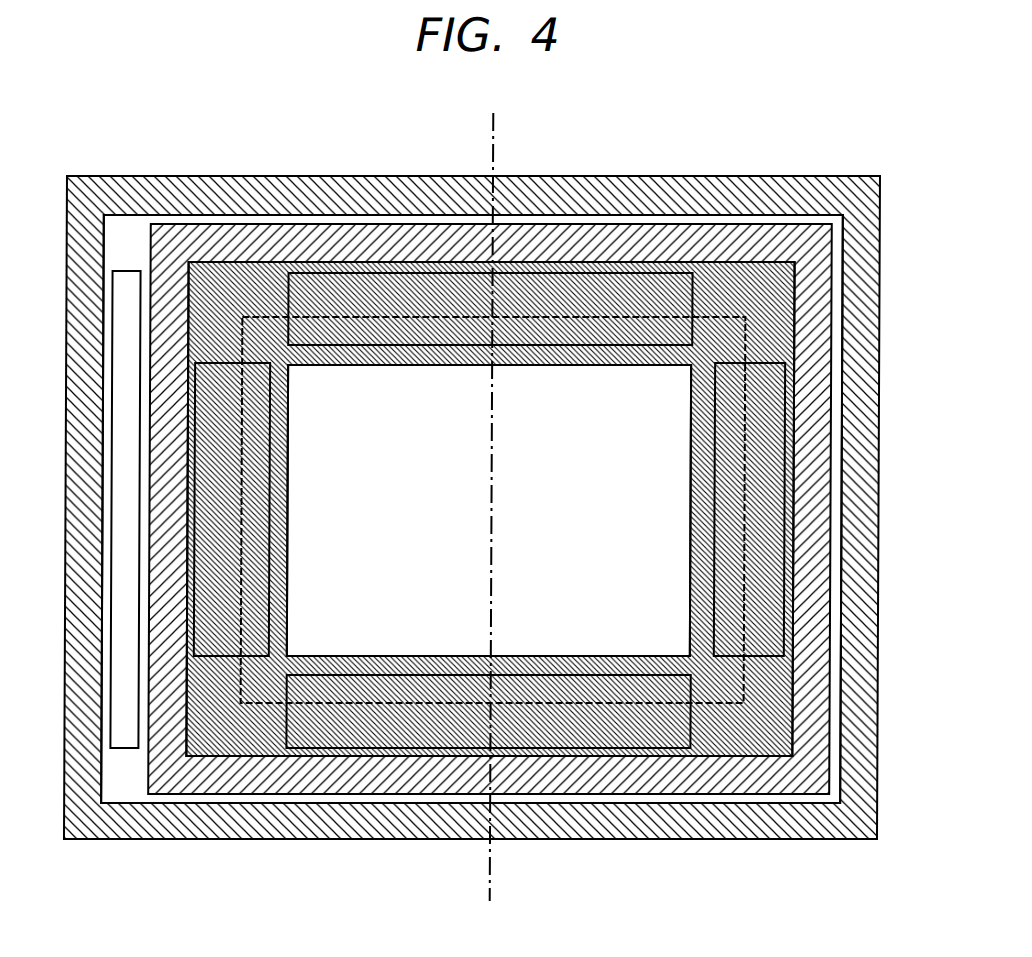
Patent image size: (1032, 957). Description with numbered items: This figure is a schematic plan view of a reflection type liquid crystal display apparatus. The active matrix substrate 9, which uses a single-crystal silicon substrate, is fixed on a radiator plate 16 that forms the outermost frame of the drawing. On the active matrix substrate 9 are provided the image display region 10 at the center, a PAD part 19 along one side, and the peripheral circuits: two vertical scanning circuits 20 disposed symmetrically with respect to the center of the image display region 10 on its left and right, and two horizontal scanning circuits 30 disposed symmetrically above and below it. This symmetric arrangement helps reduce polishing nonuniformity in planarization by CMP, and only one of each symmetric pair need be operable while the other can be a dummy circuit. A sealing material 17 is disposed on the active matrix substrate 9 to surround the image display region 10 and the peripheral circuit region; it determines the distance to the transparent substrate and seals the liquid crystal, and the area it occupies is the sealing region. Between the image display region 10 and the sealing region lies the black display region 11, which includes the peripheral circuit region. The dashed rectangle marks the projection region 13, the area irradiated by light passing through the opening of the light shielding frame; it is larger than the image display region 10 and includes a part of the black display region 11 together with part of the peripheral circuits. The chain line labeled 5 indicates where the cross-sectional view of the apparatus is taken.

The radiator plate 16 is at (842, 818).
The active matrix substrate 9 is at (830, 734).
The sealing material 17 is at (785, 218).
The black display region 11 is at (723, 265).
The image display region 10 is at (547, 357).
The horizontal scanning circuit 30 is at (637, 264).
The vertical scanning circuit 20 is at (214, 650).
The projection region 13 is at (738, 331).
The PAD part 19 is at (115, 742).
The line 5- 5 is at (485, 105).